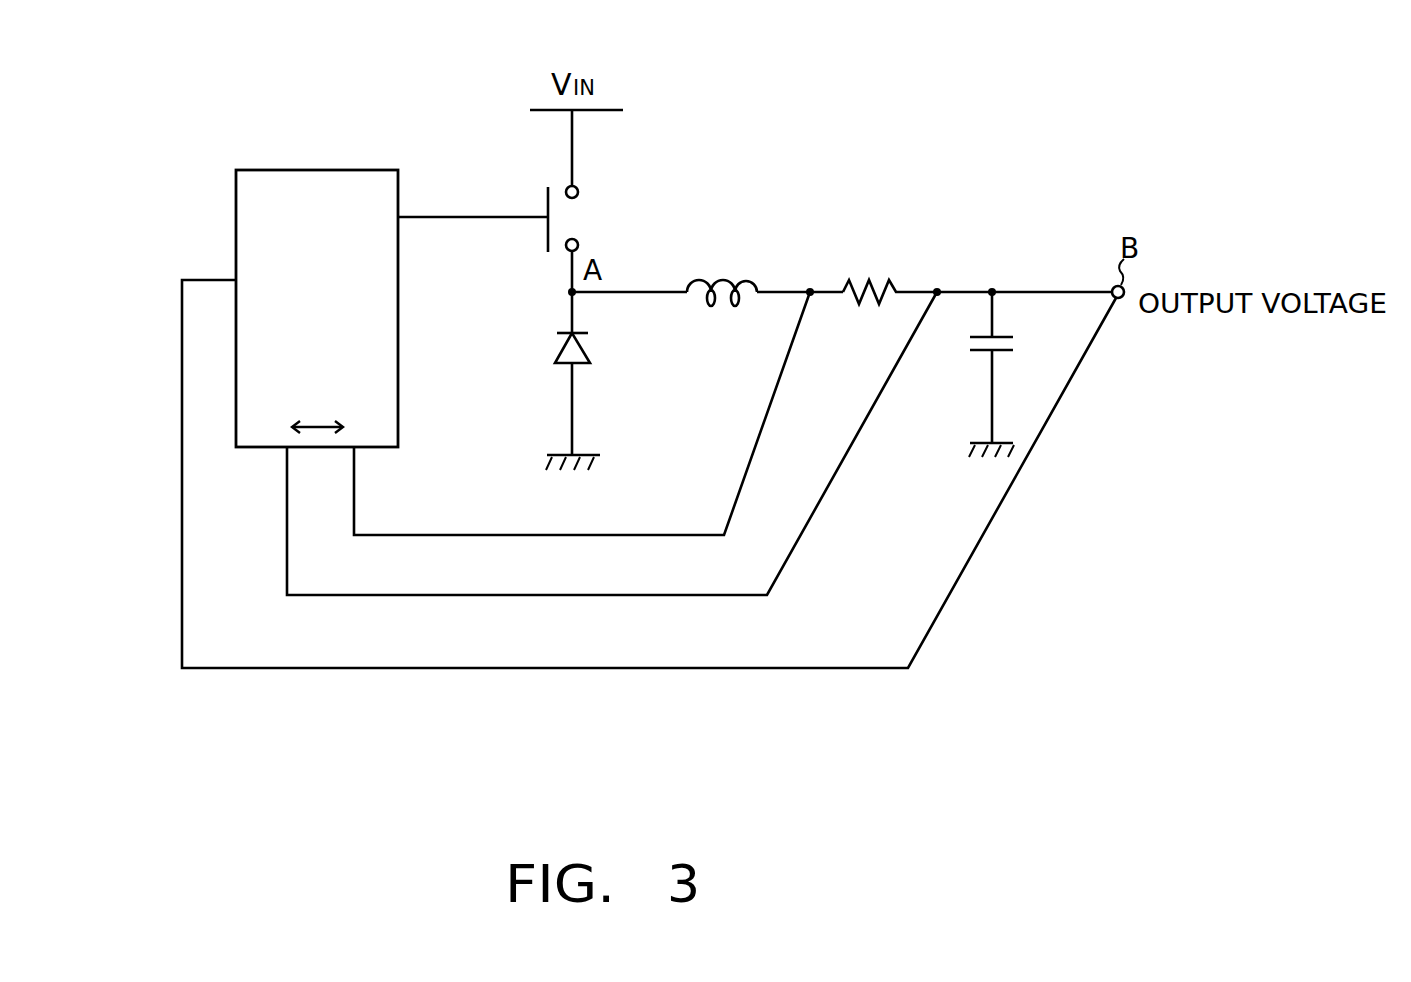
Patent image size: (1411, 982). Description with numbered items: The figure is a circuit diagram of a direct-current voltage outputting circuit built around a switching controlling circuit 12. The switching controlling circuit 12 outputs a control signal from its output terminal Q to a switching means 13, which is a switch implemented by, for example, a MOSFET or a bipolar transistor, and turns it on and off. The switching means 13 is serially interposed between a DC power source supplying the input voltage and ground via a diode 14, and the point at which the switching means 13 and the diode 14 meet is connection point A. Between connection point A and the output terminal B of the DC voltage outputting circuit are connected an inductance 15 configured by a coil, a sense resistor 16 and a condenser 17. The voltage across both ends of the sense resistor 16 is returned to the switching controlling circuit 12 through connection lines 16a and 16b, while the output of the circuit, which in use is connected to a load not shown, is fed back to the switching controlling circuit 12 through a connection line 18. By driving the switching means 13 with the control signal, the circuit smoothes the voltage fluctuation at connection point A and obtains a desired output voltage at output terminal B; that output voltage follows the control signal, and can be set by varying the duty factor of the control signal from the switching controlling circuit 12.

The switching controlling circuit 12 is at (350, 170).
The switching means 13 is at (575, 218).
The diode 14 is at (590, 350).
The inductance 15 is at (727, 272).
The sense resistor 16 is at (877, 285).
The connection line 16a is at (776, 397).
The connection line 16b is at (835, 480).
The condenser 17 is at (1018, 347).
The connection line 18 is at (740, 675).